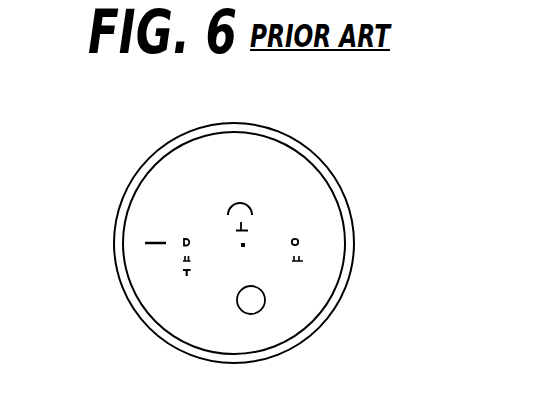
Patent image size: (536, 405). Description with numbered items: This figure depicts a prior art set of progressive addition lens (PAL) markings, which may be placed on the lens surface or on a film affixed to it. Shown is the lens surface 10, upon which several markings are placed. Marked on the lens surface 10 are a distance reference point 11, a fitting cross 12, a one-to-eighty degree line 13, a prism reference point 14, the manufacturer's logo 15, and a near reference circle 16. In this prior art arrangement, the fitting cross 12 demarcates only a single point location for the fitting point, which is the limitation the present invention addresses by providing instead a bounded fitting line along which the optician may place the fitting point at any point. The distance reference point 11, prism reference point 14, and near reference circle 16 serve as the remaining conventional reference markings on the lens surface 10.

The lens surface 10 is at (320, 119).
The distance reference point 11 is at (248, 205).
The fitting cross 12 is at (248, 228).
The 1–80 degree line 13 is at (334, 244).
The prism reference point 14 is at (298, 245).
The manufacturer's logo 15 is at (303, 262).
The near reference circle 16 is at (262, 310).